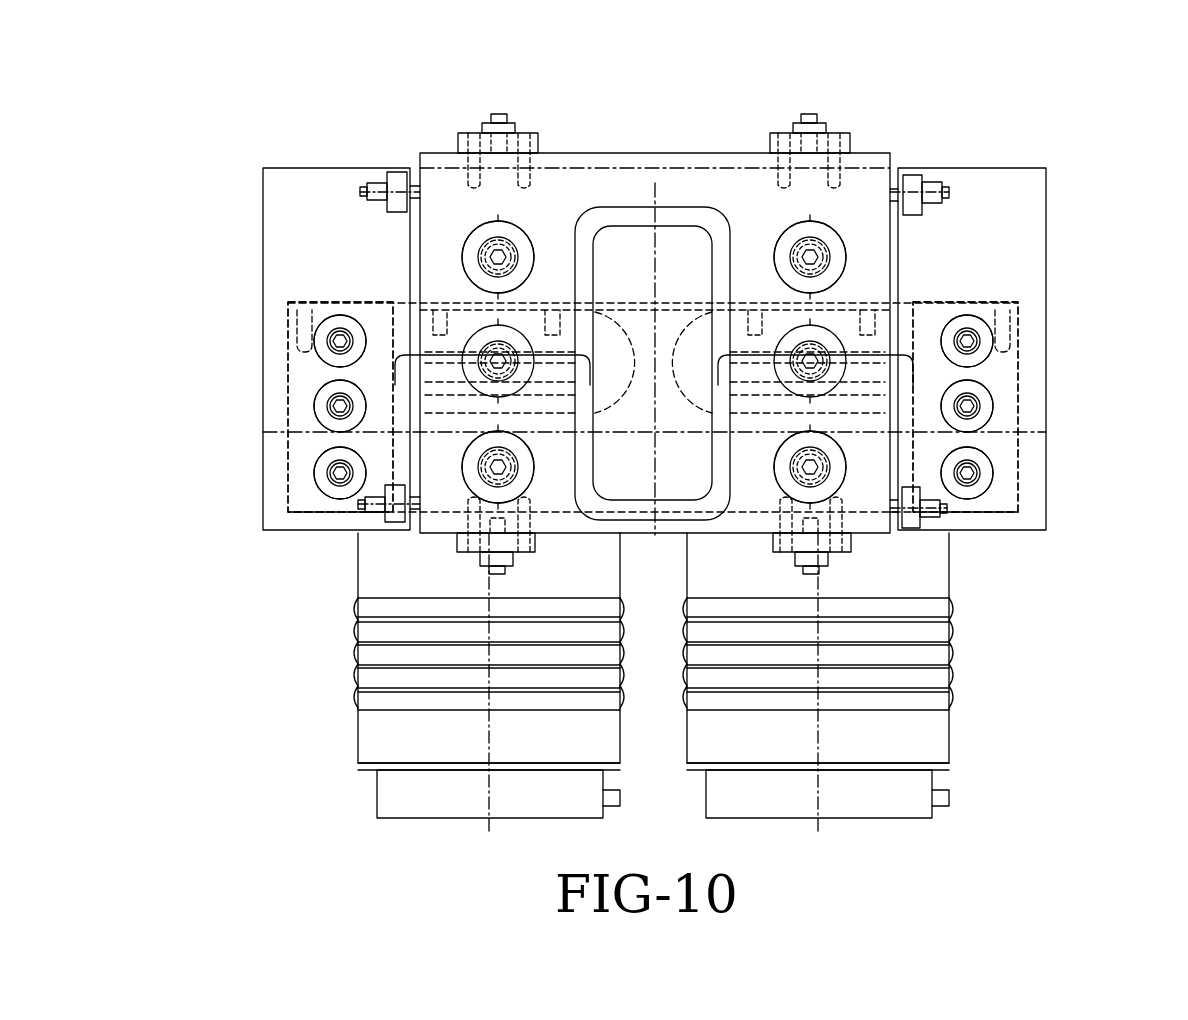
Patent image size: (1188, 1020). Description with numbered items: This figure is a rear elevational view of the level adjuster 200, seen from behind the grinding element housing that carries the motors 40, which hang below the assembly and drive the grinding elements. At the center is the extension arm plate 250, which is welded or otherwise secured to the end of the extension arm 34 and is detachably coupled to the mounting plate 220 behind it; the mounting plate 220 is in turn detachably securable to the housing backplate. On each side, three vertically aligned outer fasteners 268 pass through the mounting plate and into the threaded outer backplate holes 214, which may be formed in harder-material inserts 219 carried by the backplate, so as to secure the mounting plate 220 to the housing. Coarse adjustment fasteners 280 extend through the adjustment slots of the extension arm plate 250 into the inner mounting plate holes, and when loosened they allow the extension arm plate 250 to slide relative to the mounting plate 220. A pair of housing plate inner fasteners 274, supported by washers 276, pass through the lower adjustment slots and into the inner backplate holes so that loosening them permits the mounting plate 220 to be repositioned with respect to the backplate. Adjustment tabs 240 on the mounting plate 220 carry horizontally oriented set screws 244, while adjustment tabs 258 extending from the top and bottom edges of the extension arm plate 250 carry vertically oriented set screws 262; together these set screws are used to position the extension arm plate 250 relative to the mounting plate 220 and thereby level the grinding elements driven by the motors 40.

The level adjuster 200 is at (221, 146).
The mounting plate 220 is at (1023, 169).
The extension arm plate 250 is at (641, 153).
The extension arm 34 is at (660, 207).
The outer fasteners 268 is at (333, 337).
The outer backplate holes 214 is at (330, 392).
The inserts 219 is at (310, 405).
The coarse adjustment fasteners 280 is at (492, 350).
The housing plate inner fasteners 274 is at (465, 472).
The washers 276 is at (530, 238).
The adjustment tabs 240 is at (396, 174).
The set screws 244 is at (364, 190).
The adjustment tabs 258 is at (462, 134).
The set screws 262 is at (506, 113).
The motors 40 is at (383, 730).